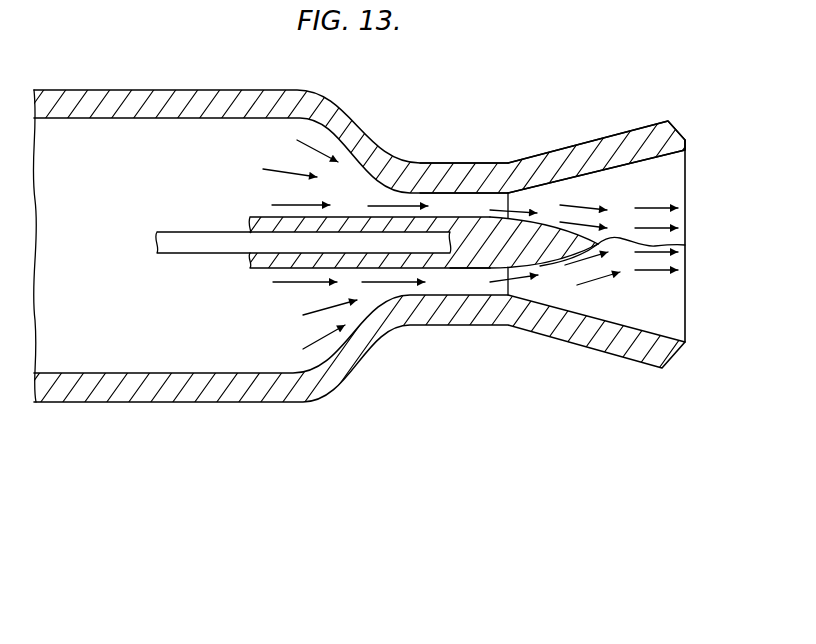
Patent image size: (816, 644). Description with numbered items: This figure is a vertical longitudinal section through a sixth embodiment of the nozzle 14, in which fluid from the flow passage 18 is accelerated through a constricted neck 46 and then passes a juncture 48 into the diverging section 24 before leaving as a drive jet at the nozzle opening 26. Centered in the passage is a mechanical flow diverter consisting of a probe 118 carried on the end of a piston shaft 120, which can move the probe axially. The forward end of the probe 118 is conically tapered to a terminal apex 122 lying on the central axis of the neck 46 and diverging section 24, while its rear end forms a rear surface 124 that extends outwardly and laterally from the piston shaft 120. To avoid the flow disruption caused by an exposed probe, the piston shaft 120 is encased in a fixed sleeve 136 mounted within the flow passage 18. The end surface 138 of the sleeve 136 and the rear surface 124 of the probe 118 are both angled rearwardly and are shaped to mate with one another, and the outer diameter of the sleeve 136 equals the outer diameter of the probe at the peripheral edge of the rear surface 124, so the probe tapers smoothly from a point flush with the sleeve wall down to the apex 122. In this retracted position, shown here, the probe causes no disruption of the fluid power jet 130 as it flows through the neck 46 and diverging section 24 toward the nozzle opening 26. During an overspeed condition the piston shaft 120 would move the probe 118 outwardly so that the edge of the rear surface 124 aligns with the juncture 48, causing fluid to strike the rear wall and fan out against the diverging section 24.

The nozzle 14 is at (355, 370).
The flow passage 18 is at (155, 133).
The diverging section 24 is at (632, 178).
The nozzle opening 26 is at (679, 149).
The neck 46 is at (466, 204).
The juncture 48 is at (530, 190).
The probe 118 is at (555, 255).
The piston shaft 120 is at (197, 242).
The terminal apex 122 is at (685, 245).
The rear surface 124 is at (474, 232).
The fluid power jet 130 is at (653, 228).
The sleeve 136 is at (347, 219).
The end surface 138 is at (480, 268).